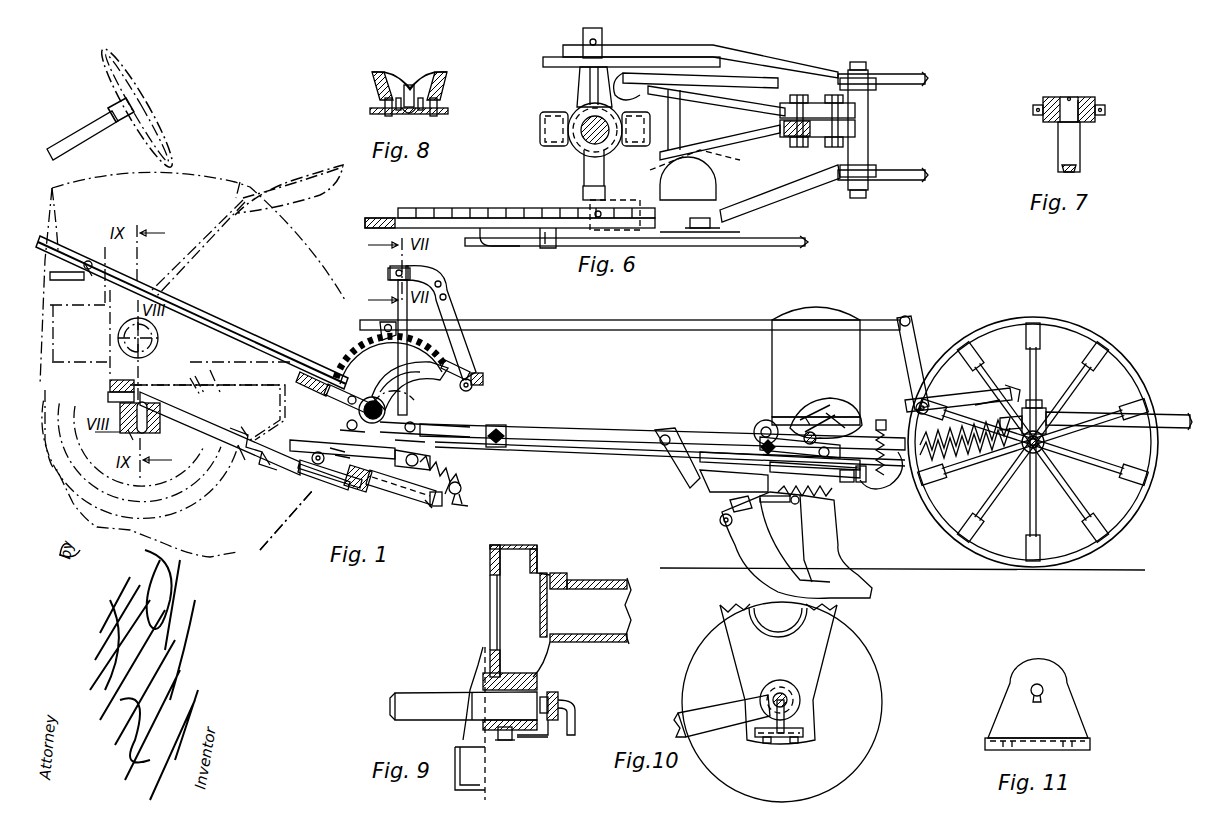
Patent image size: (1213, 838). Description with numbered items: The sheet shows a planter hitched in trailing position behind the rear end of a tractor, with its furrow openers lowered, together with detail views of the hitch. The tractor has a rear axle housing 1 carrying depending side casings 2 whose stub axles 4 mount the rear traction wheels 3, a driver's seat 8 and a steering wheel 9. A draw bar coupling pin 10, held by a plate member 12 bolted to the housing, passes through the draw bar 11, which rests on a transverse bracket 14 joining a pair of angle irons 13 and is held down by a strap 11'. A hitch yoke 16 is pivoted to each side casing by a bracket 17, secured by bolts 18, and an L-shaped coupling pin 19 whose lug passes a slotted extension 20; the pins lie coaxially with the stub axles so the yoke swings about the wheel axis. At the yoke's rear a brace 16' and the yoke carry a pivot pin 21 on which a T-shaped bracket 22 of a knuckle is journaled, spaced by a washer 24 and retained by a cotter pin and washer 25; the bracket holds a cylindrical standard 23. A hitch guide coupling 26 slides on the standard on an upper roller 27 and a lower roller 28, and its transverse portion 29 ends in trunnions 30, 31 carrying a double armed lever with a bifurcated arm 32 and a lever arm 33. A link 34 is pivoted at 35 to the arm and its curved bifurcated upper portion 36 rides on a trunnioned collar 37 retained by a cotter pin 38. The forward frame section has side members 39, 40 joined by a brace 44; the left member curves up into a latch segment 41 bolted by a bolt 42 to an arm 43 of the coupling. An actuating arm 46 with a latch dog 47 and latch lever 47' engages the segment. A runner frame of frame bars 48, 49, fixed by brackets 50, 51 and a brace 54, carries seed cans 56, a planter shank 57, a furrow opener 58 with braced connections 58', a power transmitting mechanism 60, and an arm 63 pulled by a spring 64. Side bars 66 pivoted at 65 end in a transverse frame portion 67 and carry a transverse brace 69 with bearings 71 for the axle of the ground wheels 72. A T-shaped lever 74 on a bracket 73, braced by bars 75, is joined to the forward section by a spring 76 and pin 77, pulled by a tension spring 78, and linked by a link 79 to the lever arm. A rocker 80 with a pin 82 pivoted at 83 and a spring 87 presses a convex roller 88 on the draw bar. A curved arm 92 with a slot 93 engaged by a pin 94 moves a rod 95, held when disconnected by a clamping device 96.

In FIG. 1, the rear axle housing 1 is at (158, 338).
In FIG. 9, the side casing 2 is at (490, 602).
In FIG. 10, the side casing 2 is at (818, 664).
In FIG. 1, the rear traction wheel 3 is at (300, 505).
In FIG. 9, the stub axle 4 is at (450, 720).
In FIG. 1, the driver's seat 8 is at (307, 178).
In FIG. 1, the steering wheel 9 is at (116, 82).
In FIG. 1, the draw bar coupling pin 10 is at (110, 384).
In FIG. 8, the draw bar coupling pin 10 is at (409, 86).
In FIG. 1, the draw bar 11 is at (273, 468).
In FIG. 8, the draw bar 11 is at (417, 123).
In FIG. 1, the strap 11' is at (250, 460).
In FIG. 1, the plate member 12 is at (108, 398).
In FIG. 8, the plate member 12 is at (448, 111).
In FIG. 1, the angle iron 13 is at (207, 380).
In FIG. 1, the transverse bracket 14 is at (272, 412).
In FIG. 1, the hitch yoke 16 is at (220, 433).
In FIG. 9, the hitch yoke 16 is at (560, 696).
In FIG. 10, the hitch yoke 16 is at (722, 709).
In FIG. 1, the brace 16' is at (328, 484).
In FIG. 9, the bracket 17 is at (545, 738).
In FIG. 10, the bracket 17 is at (755, 733).
In FIG. 11, the bracket 17 is at (1003, 716).
In FIG. 9, the bolt 18 is at (505, 741).
In FIG. 10, the bolt 18 is at (793, 744).
In FIG. 9, the L-shaped coupling pin 19 is at (576, 722).
In FIG. 10, the L-shaped coupling pin 19 is at (806, 720).
In FIG. 11, the slotted extension 20 is at (1042, 700).
In FIG. 1, the pivot pin 21 is at (440, 500).
In FIG. 1, the T-shaped bracket 22 is at (406, 497).
In FIG. 1, the cylindrical standard 23 is at (406, 310).
In FIG. 6, the cylindrical standard 23 is at (596, 104).
In FIG. 7, the cylindrical standard 23 is at (1080, 147).
In FIG. 1, the washer 24 is at (362, 488).
In FIG. 1, the cotter pin and washer 25 is at (425, 505).
In FIG. 1, the hitch guide coupling 26 is at (438, 403).
In FIG. 6, the hitch guide coupling 26 is at (578, 142).
In FIG. 6, the upper roller 27 is at (632, 118).
In FIG. 6, the lower roller 28 is at (562, 140).
In FIG. 6, the transverse portion 29 is at (586, 178).
In FIG. 6, the trunnion 30 is at (602, 40).
In FIG. 1, the trunnion 31 is at (416, 429).
In FIG. 6, the trunnion 31 is at (606, 218).
In FIG. 1, the bifurcated arm 32 is at (486, 378).
In FIG. 6, the bifurcated arm 32 is at (748, 127).
In FIG. 1, the lever arm 33 is at (378, 328).
In FIG. 6, the lever arm 33 is at (760, 84).
In FIG. 1, the link 34 is at (455, 312).
In FIG. 6, the link 34 is at (785, 112).
In FIG. 1, the pivotal connection 35 is at (474, 388).
In FIG. 1, the curved bifurcated upper portion 36 is at (414, 270).
In FIG. 7, the curved bifurcated upper portion 36 is at (1043, 100).
In FIG. 7, the trunnioned collar 37 is at (1080, 98).
In FIG. 7, the cotter pin 38 is at (1069, 97).
In FIG. 1, the left side member 39 is at (592, 435).
In FIG. 6, the left side member 39 is at (906, 172).
In FIG. 6, the side member 40 is at (924, 84).
In FIG. 1, the latch segment 41 is at (416, 358).
In FIG. 6, the latch segment 41 is at (428, 208).
In FIG. 1, the bolt 42 is at (458, 362).
In FIG. 6, the bolt 42 is at (712, 226).
In FIG. 6, the arm 43 is at (712, 184).
In FIG. 6, the brace 44 is at (870, 113).
In FIG. 1, the actuating arm 46 is at (218, 335).
In FIG. 6, the actuating arm 46 is at (392, 220).
In FIG. 1, the latch dog 47 is at (334, 379).
In FIG. 1, the latch lever 47' is at (67, 281).
In FIG. 1, the frame bar 48 is at (770, 466).
In FIG. 1, the frame bar 49 is at (848, 484).
In FIG. 1, the bracket 50 is at (754, 432).
In FIG. 1, the bracket 51 is at (867, 483).
In FIG. 1, the brace 54 is at (700, 480).
In FIG. 1, the seed can 56 is at (772, 380).
In FIG. 1, the planter shank 57 is at (852, 555).
In FIG. 1, the furrow opener 58 is at (712, 534).
In FIG. 1, the braced connection 58' is at (726, 501).
In FIG. 1, the power transmitting mechanism 60 is at (826, 412).
In FIG. 1, the arm 63 is at (775, 502).
In FIG. 1, the spring 64 is at (832, 496).
In FIG. 1, the pivotal connection 65 is at (818, 453).
In FIG. 1, the side bar 66 is at (1128, 428).
In FIG. 1, the transverse frame portion 67 is at (1182, 432).
In FIG. 1, the transverse brace 69 is at (1050, 418).
In FIG. 1, the bearing 71 is at (1046, 442).
In FIG. 1, the ground wheel 72 is at (1085, 333).
In FIG. 1, the bracket 73 is at (915, 405).
In FIG. 1, the T-shaped lever 74 is at (915, 352).
In FIG. 1, the bar 75 is at (972, 395).
In FIG. 1, the spring 76 is at (892, 484).
In FIG. 1, the pin 77 is at (870, 418).
In FIG. 1, the tension spring 78 is at (965, 440).
In FIG. 1, the link 79 is at (618, 331).
In FIG. 1, the rocker 80 is at (318, 472).
In FIG. 1, the pin 82 is at (468, 493).
In FIG. 1, the pivot 83 is at (440, 455).
In FIG. 1, the spring 87 is at (456, 478).
In FIG. 1, the convex roller 88 is at (318, 452).
In FIG. 1, the curved arm 92 is at (355, 437).
In FIG. 6, the curved arm 92 is at (480, 238).
In FIG. 1, the slot 93 is at (372, 405).
In FIG. 1, the pin 94 is at (338, 428).
In FIG. 6, the pin 94 is at (548, 248).
In FIG. 1, the rod 95 is at (618, 453).
In FIG. 6, the rod 95 is at (775, 246).
In FIG. 1, the clamping device 96 is at (500, 448).